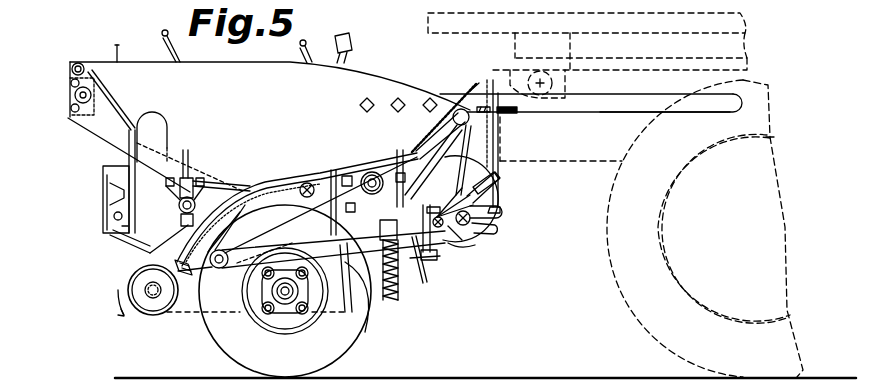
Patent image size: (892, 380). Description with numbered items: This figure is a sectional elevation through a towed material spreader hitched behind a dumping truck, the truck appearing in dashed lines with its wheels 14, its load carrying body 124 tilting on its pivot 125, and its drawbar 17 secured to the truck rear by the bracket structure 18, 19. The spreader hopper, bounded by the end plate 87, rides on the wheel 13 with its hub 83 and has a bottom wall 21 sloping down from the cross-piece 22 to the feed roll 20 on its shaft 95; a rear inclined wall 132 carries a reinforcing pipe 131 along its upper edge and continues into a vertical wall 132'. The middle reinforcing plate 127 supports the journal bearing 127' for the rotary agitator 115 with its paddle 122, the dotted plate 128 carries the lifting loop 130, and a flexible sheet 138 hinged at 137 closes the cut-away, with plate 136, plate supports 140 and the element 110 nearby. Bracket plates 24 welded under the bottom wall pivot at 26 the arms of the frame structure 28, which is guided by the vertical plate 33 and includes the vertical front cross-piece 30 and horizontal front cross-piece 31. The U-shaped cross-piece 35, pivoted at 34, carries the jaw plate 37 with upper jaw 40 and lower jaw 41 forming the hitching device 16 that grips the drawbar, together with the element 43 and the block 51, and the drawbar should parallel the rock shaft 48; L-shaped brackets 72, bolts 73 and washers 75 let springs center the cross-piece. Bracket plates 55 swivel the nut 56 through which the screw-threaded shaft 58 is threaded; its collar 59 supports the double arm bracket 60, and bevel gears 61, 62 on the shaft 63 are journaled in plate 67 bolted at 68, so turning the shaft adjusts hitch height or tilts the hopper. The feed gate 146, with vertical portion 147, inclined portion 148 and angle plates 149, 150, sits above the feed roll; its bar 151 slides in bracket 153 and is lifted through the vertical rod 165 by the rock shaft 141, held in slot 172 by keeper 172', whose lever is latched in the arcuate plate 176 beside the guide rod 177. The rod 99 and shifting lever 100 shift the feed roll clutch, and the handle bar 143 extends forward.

The wheel 13 is at (225, 343).
The wheels of the truck 14 is at (641, 326).
The hitching device 16 is at (503, 210).
The drawbar 17 is at (470, 224).
The bracket structure 18 is at (478, 128).
The bracket structure 19 is at (508, 160).
The feed roll 20 is at (138, 312).
The bottom wall 21 is at (300, 180).
The cross-piece 22 is at (431, 140).
The bracket plates 24 is at (255, 196).
The pivot 26 is at (218, 268).
The supporting frame structure 28 is at (262, 237).
The vertical front cross-piece 30 is at (425, 180).
The horizontal front cross-piece 31 is at (432, 258).
The vertical plate 33 is at (355, 300).
The pivot 34 is at (444, 212).
The cross-piece 35 is at (455, 258).
The jaw plate 37 is at (478, 228).
The upper jaw 40 is at (483, 190).
The lower jaw 41 is at (497, 230).
The upper hitch jaw 43 is at (500, 212).
The rock shaft 48 is at (455, 222).
The hitch block 51 is at (500, 178).
The bracket plates 55 is at (418, 280).
The nut 56 is at (366, 280).
The screw-threaded shaft 58 is at (391, 300).
The collar 59 is at (333, 249).
The double arm bracket 60 is at (379, 226).
The bevel gear 61 is at (331, 215).
The bevel gear 62 is at (368, 176).
The shaft 63 is at (373, 172).
The plate 67 is at (345, 176).
The bolts 68 is at (399, 172).
The L-shaped brackets 72 is at (435, 242).
The bolts 73 is at (428, 262).
The washers 75 is at (396, 185).
The wheel hub 83 is at (283, 305).
The hopper end plate 87 is at (269, 127).
The shaft of the feed roll 95 is at (153, 298).
The rod 99 is at (299, 191).
The shifting lever 100 is at (348, 56).
The lever 110 is at (302, 64).
The rotary agitator 115 is at (187, 229).
The paddle 122 is at (192, 178).
The load carrying body 124 is at (427, 18).
The pivot 125 is at (557, 83).
The reinforcing plate 127 is at (219, 232).
The journal bearing 127' is at (186, 150).
The reinforcing plate 128 is at (243, 203).
The U-shaped loop 130 is at (152, 112).
The pipe 131 is at (73, 65).
The rear inclined wall 132 is at (115, 95).
The vertical wall 132' is at (149, 181).
The plate 136 is at (436, 112).
The hinge 137 is at (415, 150).
The sheet of flexible material 138 is at (472, 86).
The plate supports 140 is at (476, 160).
The rock shaft 141 is at (71, 84).
The handle bar 143 is at (686, 106).
The feed gate 146 is at (134, 226).
The vertical portion 147 is at (126, 195).
The inwardly inclined portion 148 is at (150, 253).
The angle plate 149 is at (104, 188).
The angle plate 150 is at (115, 236).
The bar 151 is at (114, 216).
The bracket 153 is at (107, 196).
The vertical rod 165 is at (116, 52).
The slot 172 is at (53, 105).
The keeper 172' is at (48, 128).
The arcuate plate 176 is at (169, 47).
The guide rod 177 is at (162, 32).